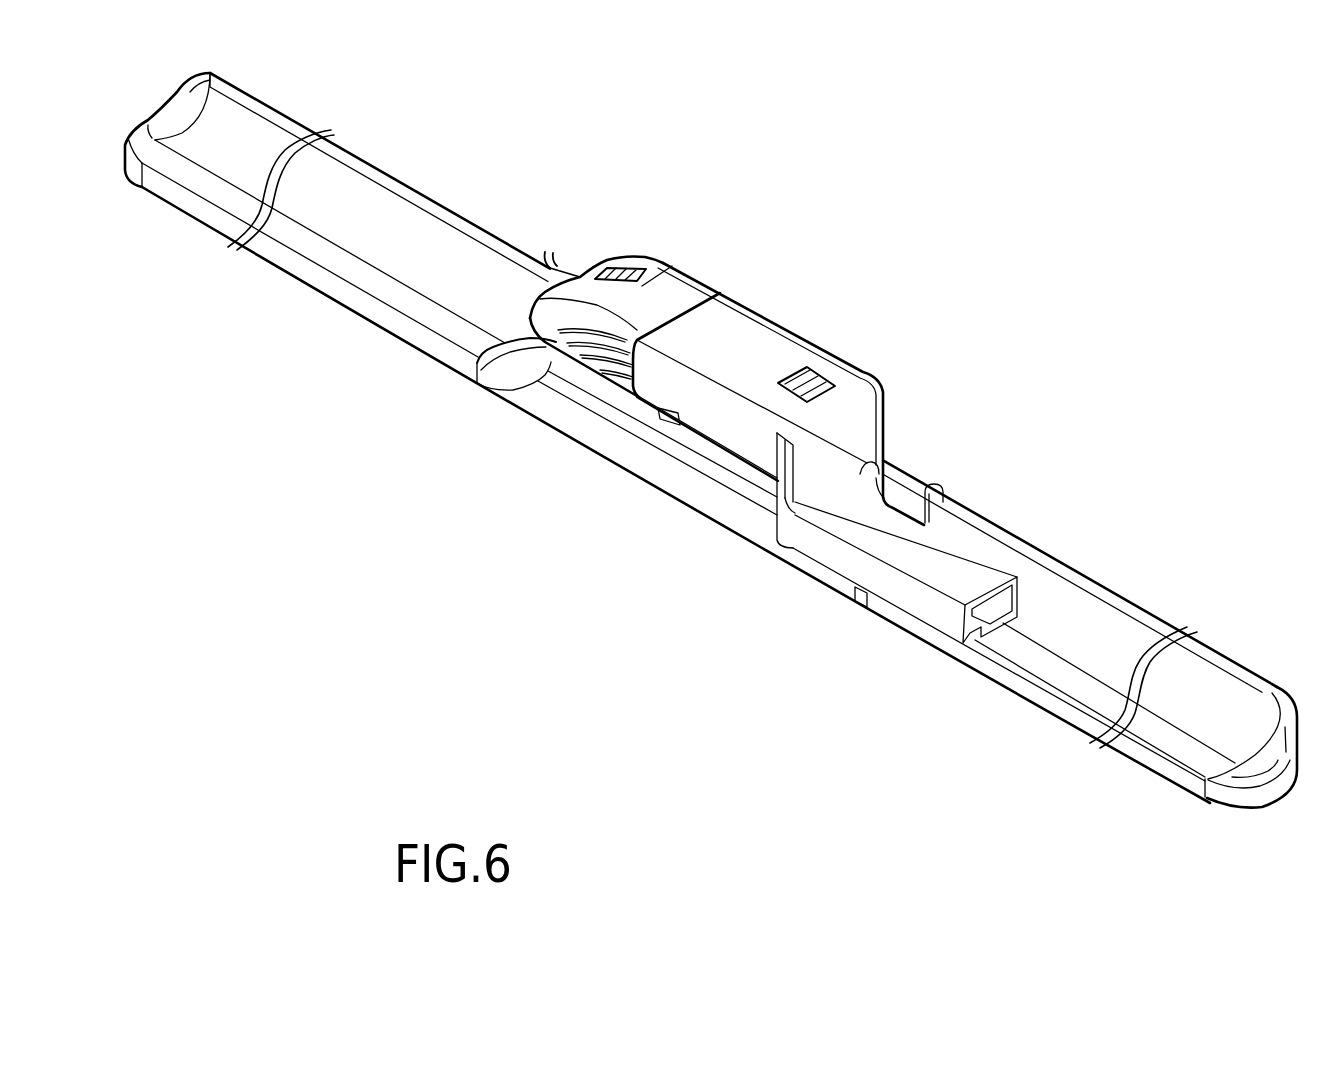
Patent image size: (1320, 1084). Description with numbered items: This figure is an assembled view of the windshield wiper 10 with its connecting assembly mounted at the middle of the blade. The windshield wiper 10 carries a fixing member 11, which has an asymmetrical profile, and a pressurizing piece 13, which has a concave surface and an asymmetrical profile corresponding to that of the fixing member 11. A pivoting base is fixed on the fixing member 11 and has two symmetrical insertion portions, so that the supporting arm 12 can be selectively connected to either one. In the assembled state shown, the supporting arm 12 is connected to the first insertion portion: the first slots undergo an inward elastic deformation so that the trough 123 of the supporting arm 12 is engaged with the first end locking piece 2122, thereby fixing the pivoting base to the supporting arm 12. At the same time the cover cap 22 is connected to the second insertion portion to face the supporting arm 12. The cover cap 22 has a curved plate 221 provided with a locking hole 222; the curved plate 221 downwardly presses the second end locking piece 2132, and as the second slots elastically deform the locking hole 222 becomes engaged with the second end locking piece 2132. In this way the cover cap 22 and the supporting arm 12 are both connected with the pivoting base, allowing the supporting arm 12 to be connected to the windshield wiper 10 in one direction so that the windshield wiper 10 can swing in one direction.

The windshield wiper 10 is at (711, 440).
The fixing member 11 is at (628, 447).
The supporting arm 12 is at (825, 453).
The pressurizing piece 13 is at (1108, 630).
The cover cap 22 is at (635, 283).
The curved plate 221 is at (552, 266).
The locking hole 222 is at (612, 225).
The second end locking piece 2132 is at (623, 262).
The first end locking piece 2122 is at (815, 370).
The trough 123 is at (879, 363).